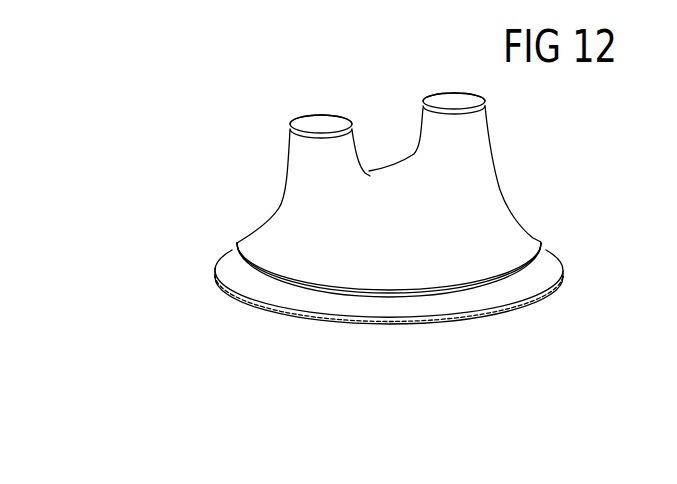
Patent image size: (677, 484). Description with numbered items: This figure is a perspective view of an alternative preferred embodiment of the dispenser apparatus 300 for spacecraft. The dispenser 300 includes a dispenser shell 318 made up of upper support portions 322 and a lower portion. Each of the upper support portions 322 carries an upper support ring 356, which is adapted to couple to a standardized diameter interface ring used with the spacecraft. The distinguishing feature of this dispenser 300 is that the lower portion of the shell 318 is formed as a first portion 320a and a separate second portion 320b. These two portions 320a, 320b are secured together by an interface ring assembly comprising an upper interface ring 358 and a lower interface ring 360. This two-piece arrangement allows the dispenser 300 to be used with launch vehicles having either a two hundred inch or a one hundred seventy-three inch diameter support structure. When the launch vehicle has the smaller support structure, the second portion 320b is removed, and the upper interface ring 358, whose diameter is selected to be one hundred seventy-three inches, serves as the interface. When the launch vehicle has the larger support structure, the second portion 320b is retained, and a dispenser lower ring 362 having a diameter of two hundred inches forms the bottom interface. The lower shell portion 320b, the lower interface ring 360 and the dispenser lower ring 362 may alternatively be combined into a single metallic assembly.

The dispenser apparatus 300 is at (402, 187).
The dispenser shell 318 is at (391, 187).
The first portion 320a is at (303, 222).
The second portion 320b is at (403, 290).
The upper support portions 322 is at (303, 150).
The upper support rings 356 is at (440, 94).
The upper interface ring 358 is at (237, 243).
The lower interface ring 360 is at (538, 268).
The dispenser lower ring 362 is at (513, 307).